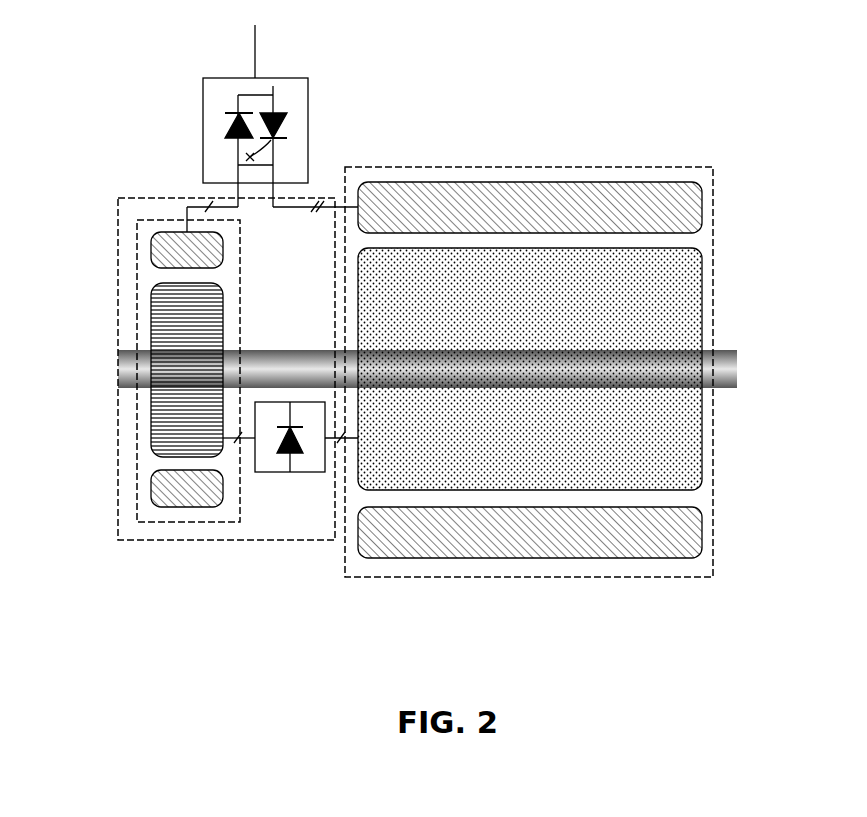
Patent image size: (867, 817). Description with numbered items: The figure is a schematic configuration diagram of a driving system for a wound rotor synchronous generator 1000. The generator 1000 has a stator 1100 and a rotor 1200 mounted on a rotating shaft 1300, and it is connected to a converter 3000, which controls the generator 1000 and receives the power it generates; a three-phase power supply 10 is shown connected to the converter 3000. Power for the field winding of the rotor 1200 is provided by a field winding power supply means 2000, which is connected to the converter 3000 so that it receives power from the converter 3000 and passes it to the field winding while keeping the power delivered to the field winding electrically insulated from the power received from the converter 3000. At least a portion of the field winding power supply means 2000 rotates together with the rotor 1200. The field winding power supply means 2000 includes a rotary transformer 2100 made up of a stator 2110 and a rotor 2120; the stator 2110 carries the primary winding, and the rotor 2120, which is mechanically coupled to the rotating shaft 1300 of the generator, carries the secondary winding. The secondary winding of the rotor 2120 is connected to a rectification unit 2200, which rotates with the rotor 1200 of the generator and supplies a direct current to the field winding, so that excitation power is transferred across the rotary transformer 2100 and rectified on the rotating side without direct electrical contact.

The three-phase power supply 10 is at (257, 40).
The wound rotor synchronous generator 1000 is at (523, 167).
The stator of generator 1100 is at (588, 208).
The rotor of generator 1200 is at (430, 440).
The rotating shaft of generator 1300 is at (718, 355).
The field winding power supply means 2000 is at (132, 541).
The rotary transformer 2100 is at (134, 388).
The stator of rotary transformer 2110 is at (193, 490).
The rotor of rotary transformer 2120 is at (152, 327).
The rectification unit 2200 is at (268, 457).
The converter 3000 is at (218, 163).